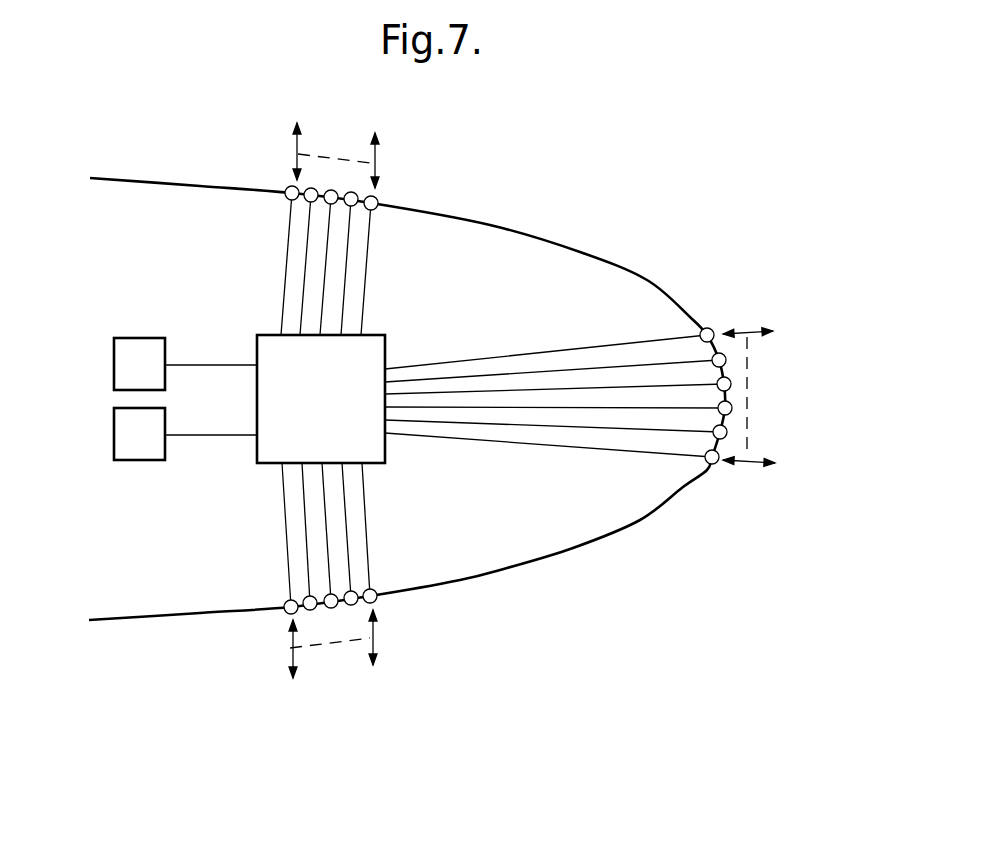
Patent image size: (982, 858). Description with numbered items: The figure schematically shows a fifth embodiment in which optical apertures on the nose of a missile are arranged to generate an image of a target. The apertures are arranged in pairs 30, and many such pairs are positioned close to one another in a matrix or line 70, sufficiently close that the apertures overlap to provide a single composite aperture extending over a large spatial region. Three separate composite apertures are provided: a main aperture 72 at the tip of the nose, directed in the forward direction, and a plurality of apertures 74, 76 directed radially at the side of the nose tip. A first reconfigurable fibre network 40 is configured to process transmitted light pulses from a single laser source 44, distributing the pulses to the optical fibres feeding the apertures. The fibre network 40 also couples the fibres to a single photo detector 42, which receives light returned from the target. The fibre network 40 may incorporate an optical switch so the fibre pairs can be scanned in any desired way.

The pair of apertures 30 is at (283, 650).
The fibre network 40 is at (267, 345).
The photo detector 42 is at (120, 435).
The laser source device 44 is at (117, 365).
The matrix or line of aperture pairs 70 is at (332, 625).
The main aperture 72 is at (763, 418).
The radially directed aperture 74 is at (347, 145).
The radially directed aperture 76 is at (360, 668).